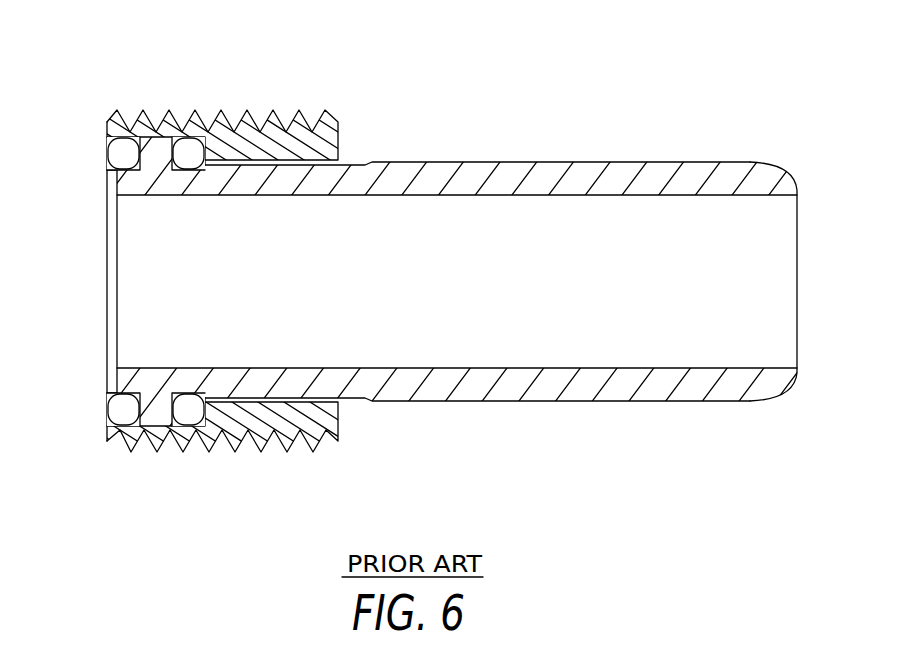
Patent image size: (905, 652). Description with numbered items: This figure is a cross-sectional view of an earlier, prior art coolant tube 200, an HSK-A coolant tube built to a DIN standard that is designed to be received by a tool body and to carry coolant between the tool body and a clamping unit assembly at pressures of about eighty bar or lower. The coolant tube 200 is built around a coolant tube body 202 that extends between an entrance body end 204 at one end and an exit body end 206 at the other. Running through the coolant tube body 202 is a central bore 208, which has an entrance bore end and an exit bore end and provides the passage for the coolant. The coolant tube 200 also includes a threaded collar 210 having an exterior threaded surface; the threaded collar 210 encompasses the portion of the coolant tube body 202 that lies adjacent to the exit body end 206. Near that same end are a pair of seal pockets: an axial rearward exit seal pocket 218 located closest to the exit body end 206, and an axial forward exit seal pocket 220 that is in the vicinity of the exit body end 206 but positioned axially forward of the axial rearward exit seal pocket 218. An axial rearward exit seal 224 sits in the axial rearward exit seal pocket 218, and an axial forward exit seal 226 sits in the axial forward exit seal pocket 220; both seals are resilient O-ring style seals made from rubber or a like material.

The coolant tube 200 is at (514, 127).
The coolant tube body 202 is at (590, 402).
The entrance body end 204 is at (798, 187).
The exit body end 206 is at (108, 381).
The central bore 208 is at (473, 300).
The threaded collar 210 is at (337, 148).
The axial rearward exit seal pocket 218 is at (127, 163).
The axial forward exit seal pocket 220 is at (186, 150).
The axial rearward exit seal 224 is at (118, 411).
The axial forward exit seal 226 is at (190, 413).